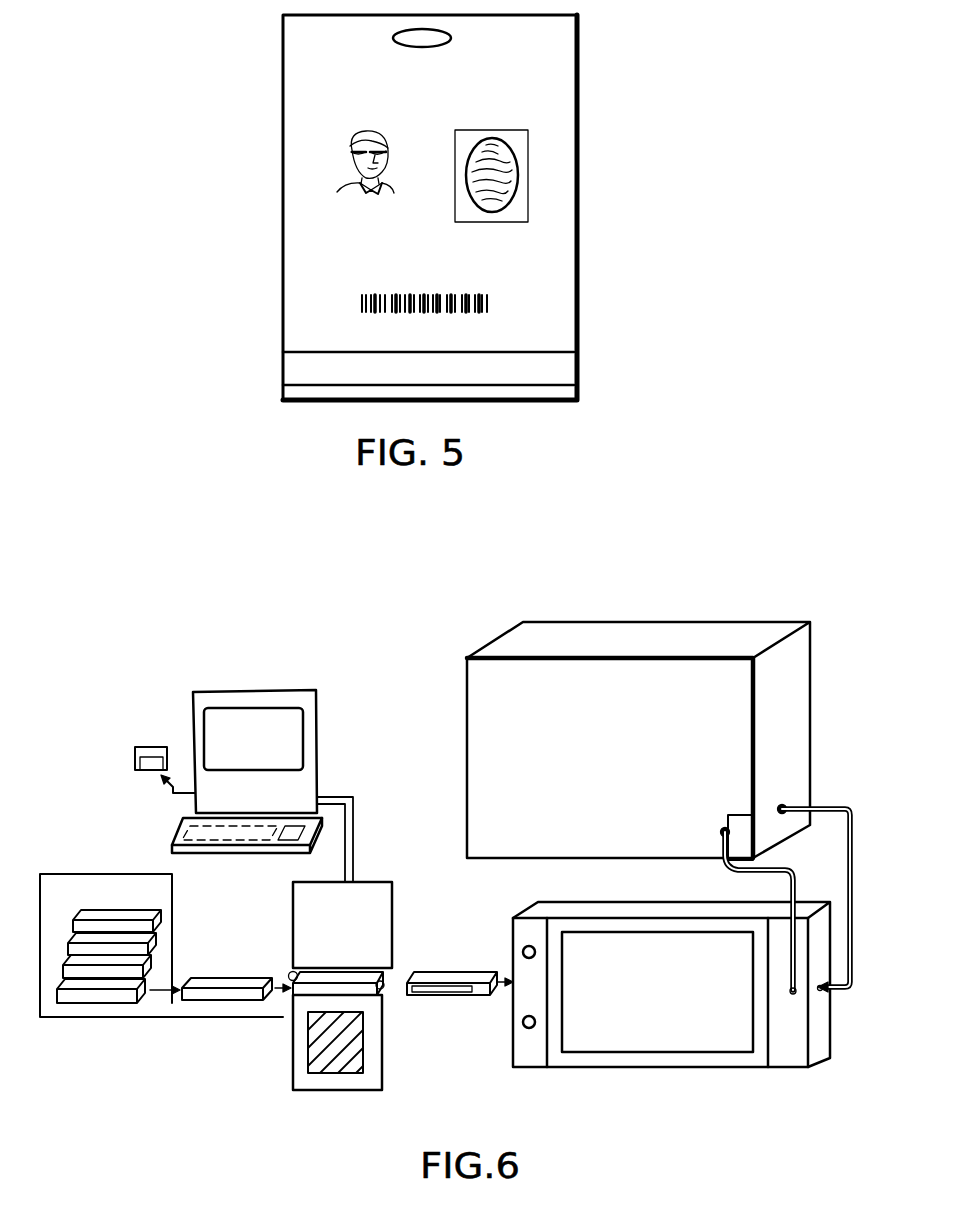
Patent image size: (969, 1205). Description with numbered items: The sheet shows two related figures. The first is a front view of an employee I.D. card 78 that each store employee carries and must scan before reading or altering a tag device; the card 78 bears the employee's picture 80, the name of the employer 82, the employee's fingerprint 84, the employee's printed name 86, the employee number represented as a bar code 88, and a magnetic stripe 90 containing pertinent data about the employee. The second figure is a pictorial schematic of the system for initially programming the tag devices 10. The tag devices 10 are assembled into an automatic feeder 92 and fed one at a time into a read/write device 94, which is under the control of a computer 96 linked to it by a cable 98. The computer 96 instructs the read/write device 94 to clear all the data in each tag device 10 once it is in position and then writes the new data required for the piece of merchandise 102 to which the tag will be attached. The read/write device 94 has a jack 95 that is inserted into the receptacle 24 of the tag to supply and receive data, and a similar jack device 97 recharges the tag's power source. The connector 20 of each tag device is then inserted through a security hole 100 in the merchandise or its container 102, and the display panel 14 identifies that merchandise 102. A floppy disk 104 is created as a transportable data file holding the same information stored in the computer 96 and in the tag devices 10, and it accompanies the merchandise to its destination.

In FIG. 5, the employee I.D. card 78 is at (578, 40).
In FIG. 5, the picture 80 is at (347, 152).
In FIG. 5, the name of the employer 82 is at (543, 78).
In FIG. 5, the fingerprint 84 is at (530, 167).
In FIG. 5, the printed name 86 is at (302, 240).
In FIG. 5, the bar code 88 is at (495, 303).
In FIG. 5, the magnetic stripe 90 is at (560, 363).
In FIG. 6, the tag device 10 is at (161, 916).
In FIG. 6, the display panel 14 is at (590, 1045).
In FIG. 6, the connector 20 is at (853, 905).
In FIG. 6, the receptacle 24 is at (833, 993).
In FIG. 6, the automatic feeder 92 is at (95, 875).
In FIG. 6, the read/write device 94 is at (293, 917).
In FIG. 6, the jack 95 is at (387, 992).
In FIG. 6, the computer 96 is at (280, 692).
In FIG. 6, the jack device 97 is at (290, 972).
In FIG. 6, the cable 98 is at (340, 796).
In FIG. 6, the security hole 100 is at (743, 824).
In FIG. 6, the merchandise 102 is at (695, 628).
In FIG. 6, the floppy disk 104 is at (135, 753).